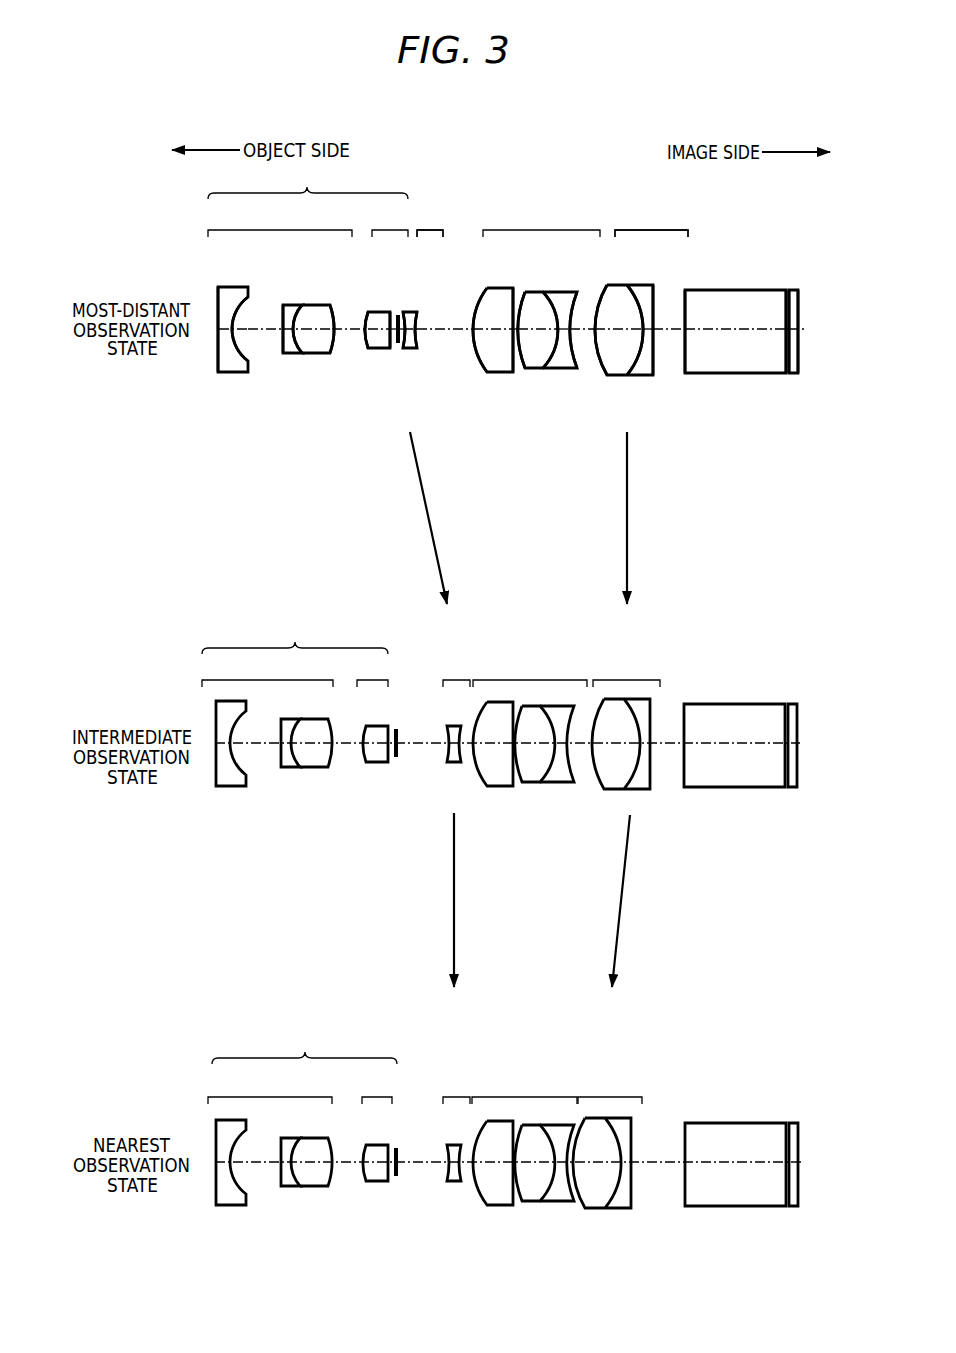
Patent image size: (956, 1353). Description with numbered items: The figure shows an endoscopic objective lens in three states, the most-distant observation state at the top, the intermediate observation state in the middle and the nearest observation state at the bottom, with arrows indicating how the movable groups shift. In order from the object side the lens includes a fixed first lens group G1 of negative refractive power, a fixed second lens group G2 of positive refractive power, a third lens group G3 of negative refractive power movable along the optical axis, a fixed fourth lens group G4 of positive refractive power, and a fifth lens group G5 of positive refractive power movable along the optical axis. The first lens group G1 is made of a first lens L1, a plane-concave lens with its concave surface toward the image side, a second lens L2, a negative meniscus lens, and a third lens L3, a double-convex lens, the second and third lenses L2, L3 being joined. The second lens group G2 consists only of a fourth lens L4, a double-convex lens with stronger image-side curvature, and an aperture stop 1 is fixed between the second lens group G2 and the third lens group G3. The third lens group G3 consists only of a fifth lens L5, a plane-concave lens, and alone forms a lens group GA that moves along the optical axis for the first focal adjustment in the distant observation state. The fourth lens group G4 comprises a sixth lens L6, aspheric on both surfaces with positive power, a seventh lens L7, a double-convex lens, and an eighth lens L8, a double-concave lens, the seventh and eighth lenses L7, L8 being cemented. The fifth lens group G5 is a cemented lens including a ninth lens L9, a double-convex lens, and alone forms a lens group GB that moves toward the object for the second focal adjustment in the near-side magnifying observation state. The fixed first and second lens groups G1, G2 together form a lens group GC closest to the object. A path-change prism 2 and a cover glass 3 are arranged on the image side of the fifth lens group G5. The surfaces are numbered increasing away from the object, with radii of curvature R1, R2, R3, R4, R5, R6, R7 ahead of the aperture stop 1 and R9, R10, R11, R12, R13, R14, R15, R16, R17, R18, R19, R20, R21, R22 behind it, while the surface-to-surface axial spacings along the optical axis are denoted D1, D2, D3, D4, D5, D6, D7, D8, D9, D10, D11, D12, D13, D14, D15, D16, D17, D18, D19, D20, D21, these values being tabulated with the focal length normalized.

The aperture stop 1 is at (401, 365).
The path-change prism 2 is at (730, 374).
The cover glass 3 is at (793, 374).
The first lens L1 is at (236, 372).
The second lens L2 is at (290, 353).
The third lens L3 is at (320, 353).
The fourth lens L4 is at (375, 350).
The fifth lens L5 is at (412, 350).
The sixth lens L6 is at (495, 373).
The seventh lens L7 is at (530, 369).
The eighth lens L8 is at (565, 369).
The ninth lens L9 is at (640, 376).
The first lens group G1 is at (277, 654).
The second lens group G2 is at (382, 654).
The third lens group G3 is at (443, 654).
The fourth lens group G4 is at (536, 656).
The fifth lens group G5 is at (633, 656).
The lens group A GA is at (443, 625).
The lens group B GB is at (651, 233).
The lens group C GC is at (305, 614).
The radius of curvature of first surface R1 is at (218, 290).
The radius of curvature of second surface R2 is at (248, 297).
The radius of curvature of third surface R3 is at (283, 305).
The radius of curvature of fourth surface R4 is at (300, 305).
The radius of curvature of fifth surface R5 is at (330, 305).
The radius of curvature of sixth surface R6 is at (368, 312).
The radius of curvature of seventh surface R7 is at (388, 312).
The radius of curvature of ninth surface R9 is at (405, 312).
The radius of curvature of tenth surface R10 is at (417, 312).
The radius of curvature of eleventh surface R11 is at (476, 315).
The radius of curvature of twelfth surface R12 is at (512, 289).
The radius of curvature of thirteenth surface R13 is at (524, 292).
The radius of curvature of fourteenth surface R14 is at (546, 292).
The radius of curvature of fifteenth surface R15 is at (576, 292).
The radius of curvature of sixteenth surface R16 is at (607, 285).
The radius of curvature of seventeenth surface R17 is at (636, 286).
The radius of curvature of eighteenth surface R18 is at (655, 288).
The radius of curvature of nineteenth surface R19 is at (686, 291).
The radius of curvature of twentieth surface R20 is at (785, 291).
The radius of curvature of twenty-first surface R21 is at (789, 290).
The radius of curvature of twenty-second surface R22 is at (798, 290).
The surface-to-surface axial spacing D1 is at (226, 322).
The surface-to-surface axial spacing D2 is at (242, 338).
The surface-to-surface axial spacing D3 is at (285, 327).
The surface-to-surface axial spacing D4 is at (326, 343).
The surface-to-surface axial spacing D5 is at (350, 327).
The surface-to-surface axial spacing D6 is at (378, 320).
The surface-to-surface axial spacing D7 is at (386, 348).
The surface-to-surface axial spacing D8 is at (397, 320).
The surface-to-surface axial spacing D9 is at (418, 329).
The surface-to-surface axial spacing D10 is at (440, 338).
The surface-to-surface axial spacing D11 is at (498, 331).
The surface-to-surface axial spacing D12 is at (516, 350).
The surface-to-surface axial spacing D13 is at (535, 329).
The surface-to-surface axial spacing D14 is at (575, 345).
The surface-to-surface axial spacing D15 is at (588, 320).
The surface-to-surface axial spacing D16 is at (618, 338).
The surface-to-surface axial spacing D17 is at (648, 340).
The surface-to-surface axial spacing D18 is at (672, 329).
The surface-to-surface axial spacing D19 is at (740, 329).
The surface-to-surface axial spacing D20 is at (780, 329).
The surface-to-surface axial spacing D21 is at (800, 345).